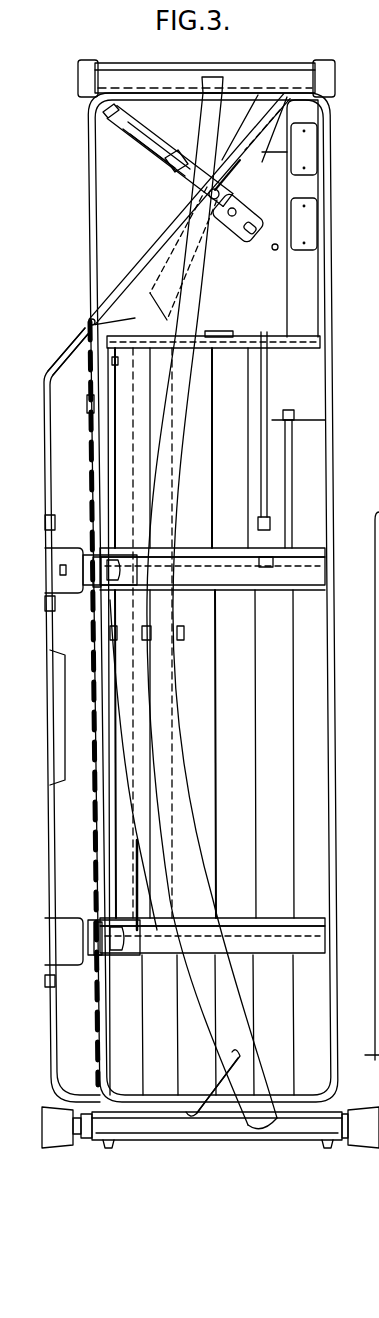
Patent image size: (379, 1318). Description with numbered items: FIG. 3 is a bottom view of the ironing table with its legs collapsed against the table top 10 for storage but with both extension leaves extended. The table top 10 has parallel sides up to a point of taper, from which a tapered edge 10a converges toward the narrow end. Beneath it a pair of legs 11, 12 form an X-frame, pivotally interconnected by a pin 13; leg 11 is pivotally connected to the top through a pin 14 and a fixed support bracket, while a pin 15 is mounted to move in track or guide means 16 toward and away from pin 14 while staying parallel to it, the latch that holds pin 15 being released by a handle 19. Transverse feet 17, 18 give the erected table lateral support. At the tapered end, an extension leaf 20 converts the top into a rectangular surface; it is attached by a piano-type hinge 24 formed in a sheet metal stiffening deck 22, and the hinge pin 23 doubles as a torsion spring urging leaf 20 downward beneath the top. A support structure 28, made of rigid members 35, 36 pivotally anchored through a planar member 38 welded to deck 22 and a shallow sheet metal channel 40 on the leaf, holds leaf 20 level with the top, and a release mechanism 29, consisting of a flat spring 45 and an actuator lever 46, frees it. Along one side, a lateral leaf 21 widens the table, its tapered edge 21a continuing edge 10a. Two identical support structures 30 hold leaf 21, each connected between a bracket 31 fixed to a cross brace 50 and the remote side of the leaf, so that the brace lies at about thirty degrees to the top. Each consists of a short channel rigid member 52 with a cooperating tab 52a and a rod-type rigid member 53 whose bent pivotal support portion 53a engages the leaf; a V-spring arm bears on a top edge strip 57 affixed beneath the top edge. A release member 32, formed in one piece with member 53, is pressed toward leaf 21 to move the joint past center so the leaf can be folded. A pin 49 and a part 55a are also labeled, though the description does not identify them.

The table top 10 is at (332, 165).
The tapered edge 10a is at (165, 241).
The leg 11 is at (145, 829).
The leg 12 is at (168, 723).
The pin 13 is at (184, 631).
The pin 14 is at (241, 926).
The pin 15 is at (240, 333).
The track or guide means 16 is at (116, 403).
The transverse foot 17 is at (277, 72).
The transverse foot 18 is at (300, 1130).
The handle 19 is at (302, 475).
The extension leaf 20 is at (105, 196).
The extension leaf 21 is at (60, 433).
The tapered edge 21a is at (66, 357).
The sheet metal stiffening deck 22 is at (258, 161).
The hinge pin 23 is at (90, 321).
The hinge 24 is at (130, 276).
The support structure 28 is at (215, 223).
The release mechanism 29 is at (156, 132).
The support structure 30 is at (70, 546).
The bracket 31 is at (138, 583).
The release member 32 is at (68, 698).
The rigid member 35 is at (240, 189).
The rigid member 36 is at (168, 173).
The planar member 38 is at (240, 241).
The sheet metal channel 40 is at (147, 162).
The flat spring 45 is at (128, 141).
The actuator lever 46 is at (104, 123).
The pin 49 is at (275, 252).
The cross brace 50 is at (226, 561).
The rigid member 52 is at (90, 593).
The cooperating tab 52a is at (378, 834).
The rigid member 53 is at (80, 593).
The pivotal support portion 53a is at (50, 513).
The stop 55a is at (60, 571).
The top edge strip 57 is at (90, 405).